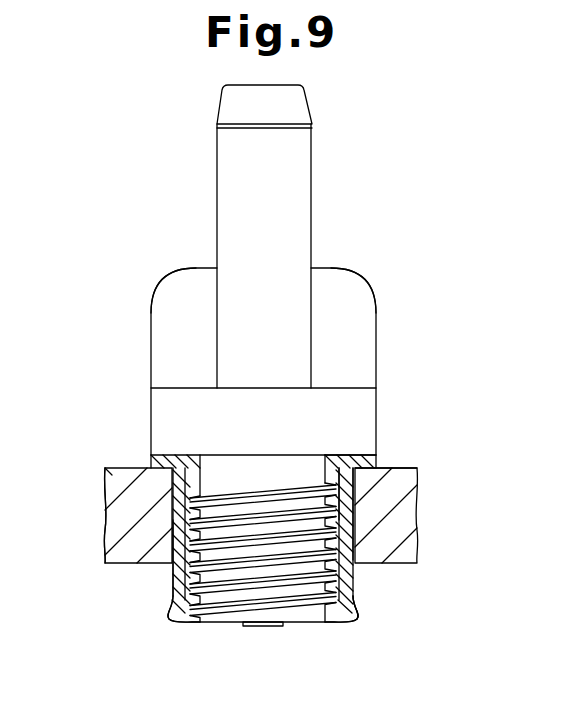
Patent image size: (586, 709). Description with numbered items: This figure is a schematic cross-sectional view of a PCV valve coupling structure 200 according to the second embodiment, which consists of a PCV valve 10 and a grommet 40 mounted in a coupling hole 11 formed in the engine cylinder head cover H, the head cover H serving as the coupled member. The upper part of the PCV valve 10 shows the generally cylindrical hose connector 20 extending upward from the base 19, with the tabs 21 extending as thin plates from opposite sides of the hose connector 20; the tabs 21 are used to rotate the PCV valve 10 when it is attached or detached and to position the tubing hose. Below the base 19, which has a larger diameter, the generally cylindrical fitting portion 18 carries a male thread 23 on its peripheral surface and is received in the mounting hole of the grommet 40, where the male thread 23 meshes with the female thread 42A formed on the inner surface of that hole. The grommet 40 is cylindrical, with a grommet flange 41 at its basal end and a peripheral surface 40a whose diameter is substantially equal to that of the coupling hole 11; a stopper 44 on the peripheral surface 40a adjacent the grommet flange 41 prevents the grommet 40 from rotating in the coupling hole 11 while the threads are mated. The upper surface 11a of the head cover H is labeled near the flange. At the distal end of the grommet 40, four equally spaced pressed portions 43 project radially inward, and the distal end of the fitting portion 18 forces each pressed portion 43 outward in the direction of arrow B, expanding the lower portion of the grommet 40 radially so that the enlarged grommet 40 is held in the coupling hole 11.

The PCV valve coupling structure 200 is at (398, 145).
The hose connector 20 is at (228, 154).
The PCV valve 10 is at (369, 253).
The tabs 21 is at (152, 311).
The base 19 is at (368, 403).
The grommet flange 41 is at (362, 466).
The engine cylinder head cover H is at (122, 468).
The panel upper surface 11a is at (358, 470).
The coupling hole 11 is at (172, 498).
The stopper 44 is at (365, 490).
The peripheral surface 40a is at (355, 522).
The female thread 42A is at (172, 553).
The male thread 23 is at (340, 590).
The grommet 40 is at (156, 620).
The pressed portions 43 is at (200, 622).
The fitting portion 18 is at (237, 614).
The arrow B is at (155, 610).